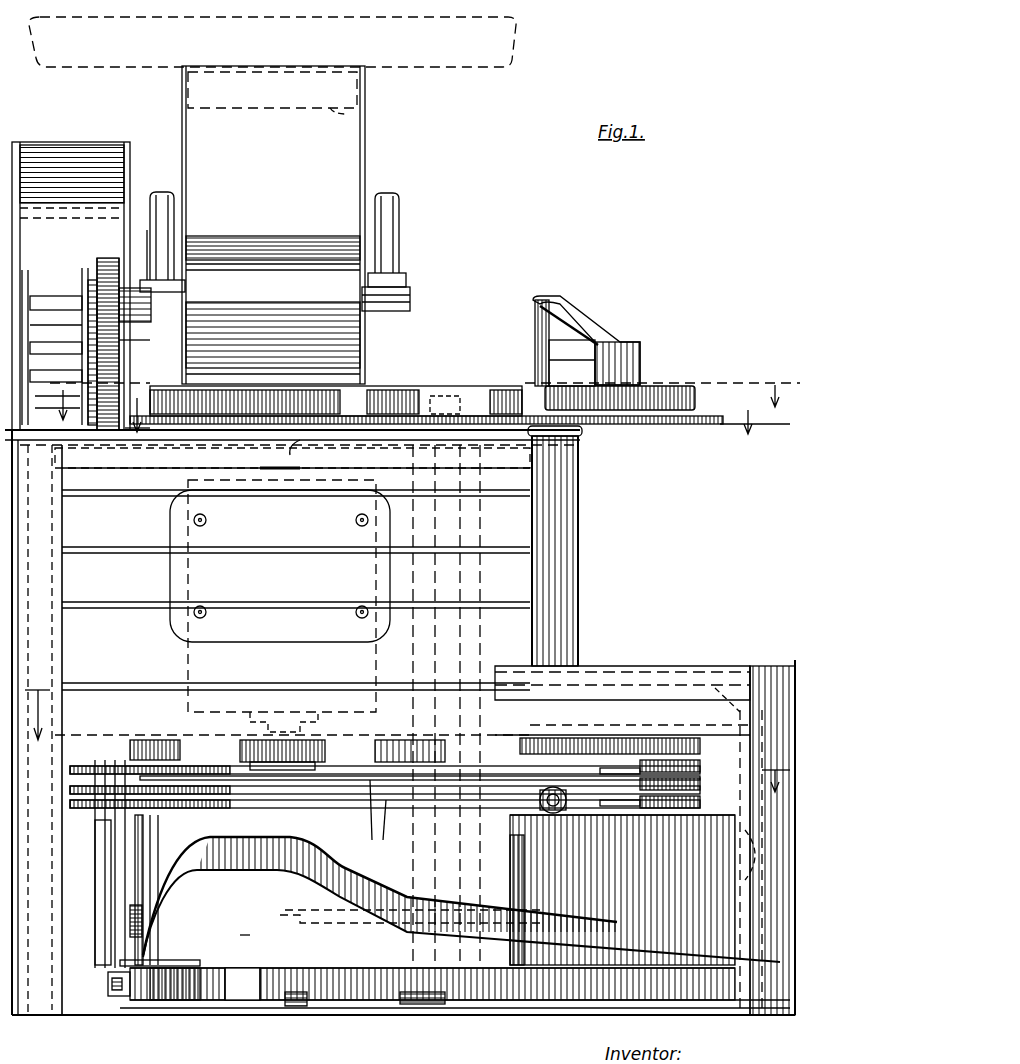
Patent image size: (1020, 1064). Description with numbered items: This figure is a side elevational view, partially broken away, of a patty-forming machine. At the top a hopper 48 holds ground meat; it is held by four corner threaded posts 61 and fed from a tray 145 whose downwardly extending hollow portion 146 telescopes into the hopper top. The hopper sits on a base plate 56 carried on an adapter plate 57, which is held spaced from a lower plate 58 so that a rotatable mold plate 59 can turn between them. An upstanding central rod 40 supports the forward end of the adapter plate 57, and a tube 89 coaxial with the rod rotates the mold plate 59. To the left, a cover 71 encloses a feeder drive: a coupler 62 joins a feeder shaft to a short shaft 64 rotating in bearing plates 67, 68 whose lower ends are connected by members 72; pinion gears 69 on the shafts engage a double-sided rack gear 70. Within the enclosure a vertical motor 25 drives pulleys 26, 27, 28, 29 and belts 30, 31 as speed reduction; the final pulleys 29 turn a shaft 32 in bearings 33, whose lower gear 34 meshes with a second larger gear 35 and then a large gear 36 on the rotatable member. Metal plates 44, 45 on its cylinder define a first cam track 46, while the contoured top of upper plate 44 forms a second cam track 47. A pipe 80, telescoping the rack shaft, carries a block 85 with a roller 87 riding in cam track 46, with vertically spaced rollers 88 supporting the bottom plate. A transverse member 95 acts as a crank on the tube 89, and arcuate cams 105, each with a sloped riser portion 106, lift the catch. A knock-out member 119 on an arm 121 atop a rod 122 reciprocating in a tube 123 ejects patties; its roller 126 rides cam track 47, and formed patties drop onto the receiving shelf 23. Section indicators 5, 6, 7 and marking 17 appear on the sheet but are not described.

The hood support 17 is at (13, 50).
The tray 145 is at (520, 40).
The hollow portion 146 is at (365, 112).
The hopper 48 is at (348, 150).
The threaded posts 61 is at (165, 192).
The coupler 62 is at (147, 230).
The cover 71 is at (50, 145).
The bearing plate 67 is at (25, 270).
The bearing plate 68 is at (85, 268).
The gears 69 is at (107, 258).
The shaft 64 is at (40, 296).
The members 72 is at (52, 370).
The rack gear 70 is at (110, 370).
The section line 5 is at (425, 394).
The section line 6 is at (457, 416).
The adapter plate 57 is at (408, 390).
The rod 40 is at (440, 400).
The base plate 56 is at (426, 386).
The mold plate 59 is at (205, 440).
The lower plate 58 is at (304, 452).
The arm 121 is at (590, 318).
The knock-out member 119 is at (678, 386).
The tube 123 is at (578, 517).
The tube 89 is at (482, 550).
The motor 25 is at (292, 601).
The receiving shelf 23 is at (692, 666).
The section line 7 is at (407, 741).
The bearings 33 is at (150, 740).
The pulley 26 is at (240, 750).
The belt 30 is at (380, 760).
The rod 122 is at (578, 755).
The pulley 27 is at (660, 775).
The pulley 28 is at (660, 800).
The pulleys 29 is at (75, 774).
The shaft 32 is at (152, 848).
The first cam track 46 is at (290, 837).
The belt 31 is at (375, 819).
The pipe 80 is at (102, 848).
The transverse member 95 is at (315, 915).
The lower plate 45 is at (245, 950).
The second cam track 47 is at (500, 815).
The roller 126 is at (550, 815).
The upper plate 44 is at (556, 905).
The roller 87 is at (128, 930).
The block 85 is at (100, 950).
The rollers 88 is at (110, 990).
The gear 34 is at (165, 1005).
The second larger gear 35 is at (238, 1005).
The riser portion 106 is at (295, 1006).
The arcuate cams 105 is at (375, 1005).
The large gear 36 is at (440, 1005).